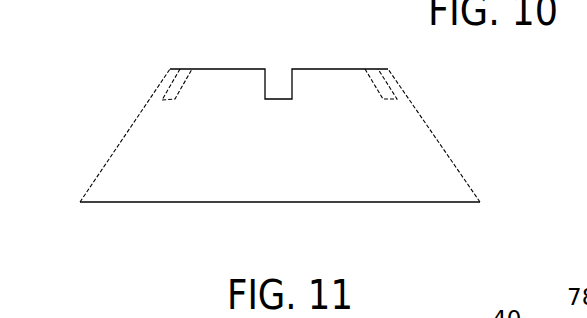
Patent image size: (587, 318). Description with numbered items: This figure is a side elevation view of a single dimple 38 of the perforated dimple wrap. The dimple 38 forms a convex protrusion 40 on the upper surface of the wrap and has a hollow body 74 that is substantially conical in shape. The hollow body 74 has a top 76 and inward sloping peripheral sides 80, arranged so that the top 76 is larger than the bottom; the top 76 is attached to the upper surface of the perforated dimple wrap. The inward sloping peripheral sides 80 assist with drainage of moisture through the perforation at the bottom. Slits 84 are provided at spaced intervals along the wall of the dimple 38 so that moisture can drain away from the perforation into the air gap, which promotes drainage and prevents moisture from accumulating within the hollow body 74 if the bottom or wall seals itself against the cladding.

The dimple 38 is at (446, 95).
The convex protrusion 40 is at (135, 123).
The inward sloping peripheral sides 80 is at (93, 181).
The slits 84 is at (266, 87).
The top 76 is at (285, 202).
The hollow body 74 is at (420, 190).